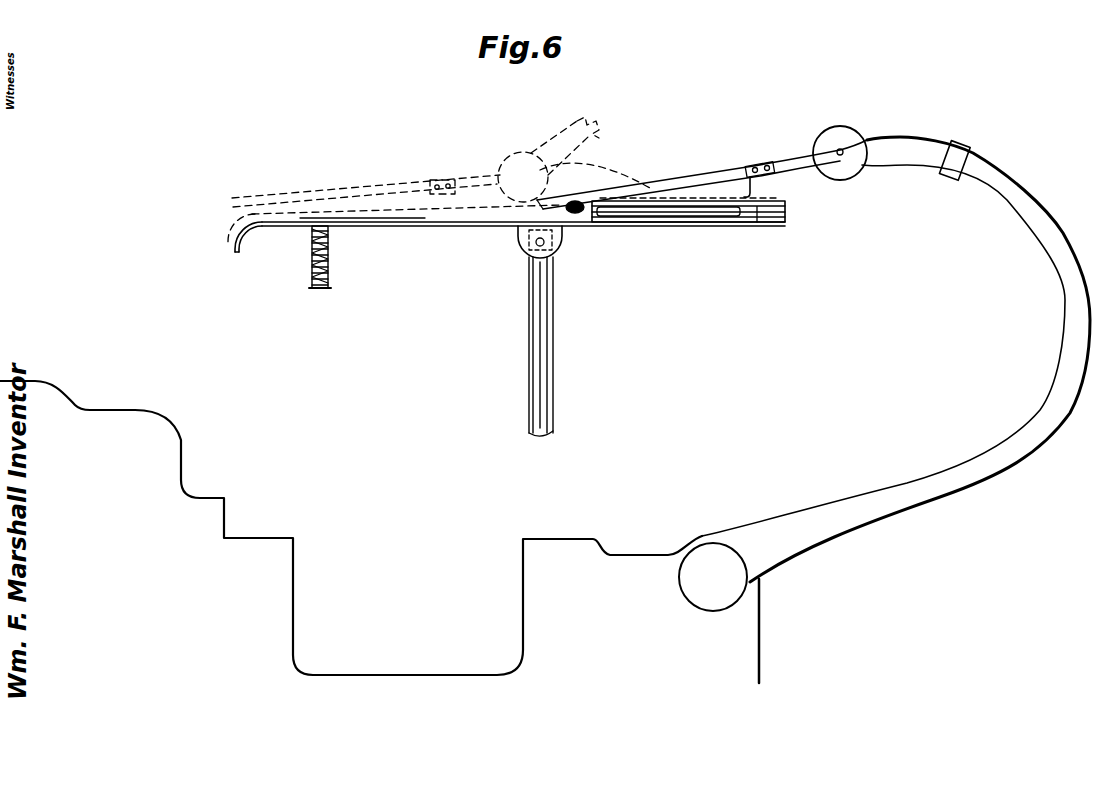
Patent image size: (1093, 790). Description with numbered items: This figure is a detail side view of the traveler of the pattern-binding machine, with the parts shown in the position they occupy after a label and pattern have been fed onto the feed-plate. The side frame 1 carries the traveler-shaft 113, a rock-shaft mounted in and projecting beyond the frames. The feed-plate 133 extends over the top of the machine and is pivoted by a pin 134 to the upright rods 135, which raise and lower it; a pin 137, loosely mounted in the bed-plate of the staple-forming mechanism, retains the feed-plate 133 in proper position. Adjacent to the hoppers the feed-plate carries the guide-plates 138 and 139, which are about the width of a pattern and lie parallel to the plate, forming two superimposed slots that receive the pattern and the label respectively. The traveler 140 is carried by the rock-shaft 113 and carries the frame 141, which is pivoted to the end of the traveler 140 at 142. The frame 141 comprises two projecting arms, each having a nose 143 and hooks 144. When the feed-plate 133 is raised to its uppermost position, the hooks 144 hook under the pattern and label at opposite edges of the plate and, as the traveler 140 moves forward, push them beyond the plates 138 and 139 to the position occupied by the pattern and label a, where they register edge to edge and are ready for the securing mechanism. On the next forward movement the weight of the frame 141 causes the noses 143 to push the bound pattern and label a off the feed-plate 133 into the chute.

The side frame 1 is at (351, 532).
The traveler-shaft 113 is at (719, 613).
The feed-plate 133 is at (473, 230).
The pin 134 is at (537, 244).
The upright rods 135 is at (540, 377).
The pin 137 is at (313, 250).
The guide-plate 138 is at (785, 217).
The guide-plate 139 is at (785, 205).
The traveler 140 is at (1077, 318).
The frame 141 is at (347, 188).
The pivot 142 is at (847, 151).
The nose 143 is at (569, 213).
The hook 144 is at (752, 188).
The pattern and label a is at (402, 220).